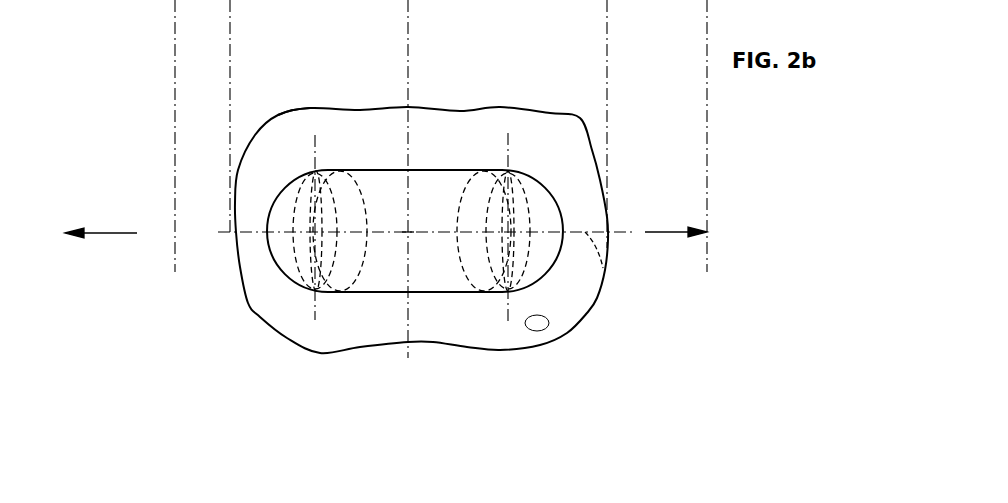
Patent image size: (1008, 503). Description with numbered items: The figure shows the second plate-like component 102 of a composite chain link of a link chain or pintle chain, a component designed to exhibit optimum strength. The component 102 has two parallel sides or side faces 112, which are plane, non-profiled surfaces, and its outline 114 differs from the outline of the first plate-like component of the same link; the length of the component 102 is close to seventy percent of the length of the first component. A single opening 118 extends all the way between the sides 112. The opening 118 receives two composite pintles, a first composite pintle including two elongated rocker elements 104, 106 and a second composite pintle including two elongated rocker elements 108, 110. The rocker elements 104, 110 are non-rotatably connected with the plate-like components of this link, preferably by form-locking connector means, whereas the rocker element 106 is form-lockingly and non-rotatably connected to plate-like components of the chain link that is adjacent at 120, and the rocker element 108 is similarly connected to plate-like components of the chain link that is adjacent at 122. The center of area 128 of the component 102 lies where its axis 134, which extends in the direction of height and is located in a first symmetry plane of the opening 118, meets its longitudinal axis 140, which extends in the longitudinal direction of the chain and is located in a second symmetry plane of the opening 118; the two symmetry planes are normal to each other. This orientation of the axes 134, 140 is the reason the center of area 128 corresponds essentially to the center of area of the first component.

The second plate-like component 102 is at (272, 385).
The rocker element 104 is at (301, 172).
The rocker element 106 is at (351, 170).
The rocker element 108 is at (487, 170).
The rocker element 110 is at (535, 172).
The side faces 112 is at (372, 334).
The outline 114 is at (277, 115).
The opening 118 is at (387, 273).
The adjacent chain link location 120 is at (103, 232).
The adjacent chain link location 122 is at (663, 233).
The center of area 128 is at (410, 231).
The axis 134 is at (409, 67).
The longitudinal axis 140 is at (603, 267).